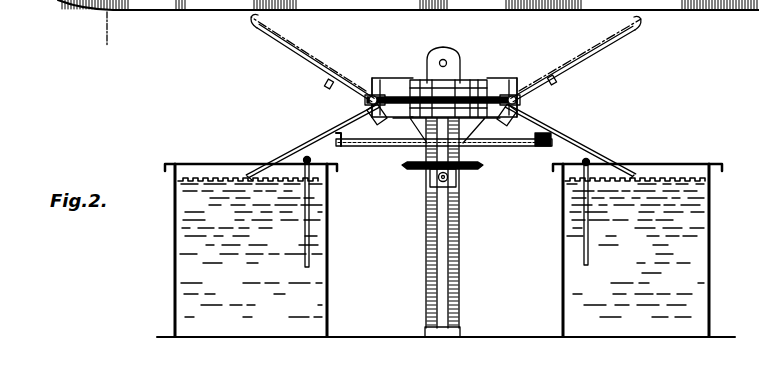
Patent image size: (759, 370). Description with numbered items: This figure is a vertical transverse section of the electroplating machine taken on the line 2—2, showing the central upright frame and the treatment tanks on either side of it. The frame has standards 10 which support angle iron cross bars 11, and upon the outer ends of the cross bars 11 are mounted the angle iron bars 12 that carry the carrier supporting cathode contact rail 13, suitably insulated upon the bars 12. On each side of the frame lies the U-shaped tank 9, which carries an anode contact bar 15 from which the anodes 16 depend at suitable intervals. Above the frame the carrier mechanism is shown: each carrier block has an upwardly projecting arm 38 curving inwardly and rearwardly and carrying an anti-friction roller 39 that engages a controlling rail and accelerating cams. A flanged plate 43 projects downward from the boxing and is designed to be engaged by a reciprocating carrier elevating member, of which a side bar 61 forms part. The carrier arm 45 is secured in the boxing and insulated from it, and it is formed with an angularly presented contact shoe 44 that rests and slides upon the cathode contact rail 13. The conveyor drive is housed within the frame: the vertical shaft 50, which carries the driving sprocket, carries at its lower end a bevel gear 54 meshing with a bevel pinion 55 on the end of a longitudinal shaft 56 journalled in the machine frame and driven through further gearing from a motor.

The line 2— 2 is at (58, 38).
The U-shaped tank 9 is at (173, 289).
The standards 10 is at (452, 248).
The angle iron cross bars 11 is at (508, 147).
The angle iron bars 12 is at (560, 143).
The cathode contact rail 13 is at (338, 100).
The anode contact bar 15 is at (309, 158).
The anodes 16 is at (309, 257).
The upwardly projecting arm 38 is at (383, 79).
The anti-friction roller 39 is at (500, 80).
The flanged plate 43 is at (519, 117).
The contact shoe 44 is at (537, 147).
The carrier arm 45 is at (318, 131).
The vertical shaft 50 is at (428, 150).
The bevel gear 54 is at (477, 170).
The bevel pinion 55 is at (431, 179).
The longitudinal shaft 56 is at (437, 187).
The side bar 61 is at (412, 119).